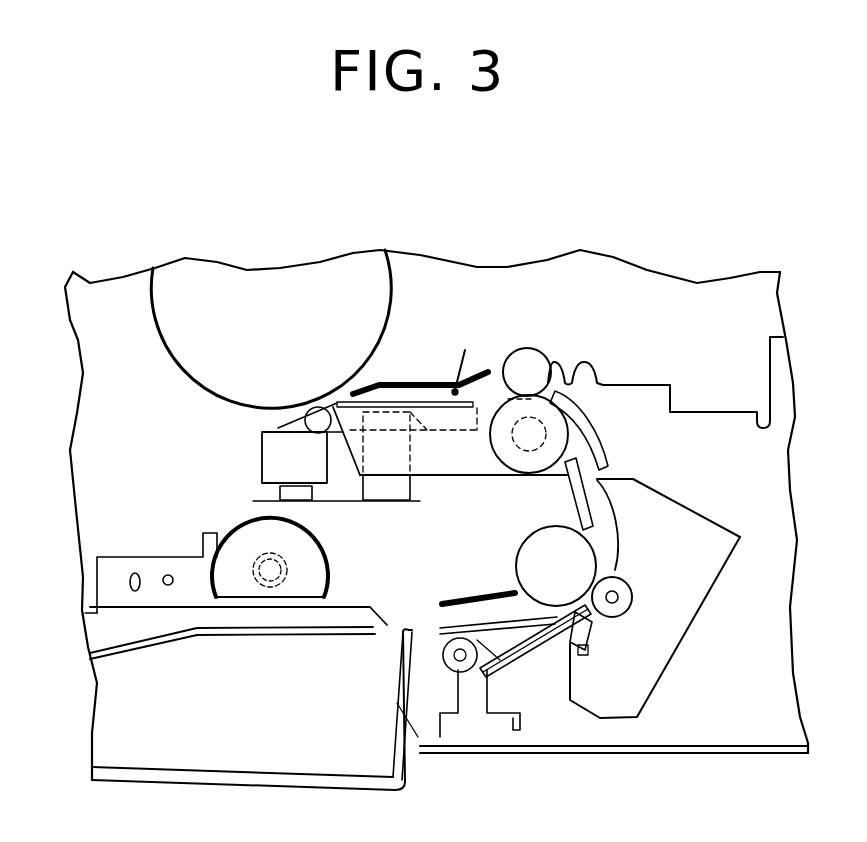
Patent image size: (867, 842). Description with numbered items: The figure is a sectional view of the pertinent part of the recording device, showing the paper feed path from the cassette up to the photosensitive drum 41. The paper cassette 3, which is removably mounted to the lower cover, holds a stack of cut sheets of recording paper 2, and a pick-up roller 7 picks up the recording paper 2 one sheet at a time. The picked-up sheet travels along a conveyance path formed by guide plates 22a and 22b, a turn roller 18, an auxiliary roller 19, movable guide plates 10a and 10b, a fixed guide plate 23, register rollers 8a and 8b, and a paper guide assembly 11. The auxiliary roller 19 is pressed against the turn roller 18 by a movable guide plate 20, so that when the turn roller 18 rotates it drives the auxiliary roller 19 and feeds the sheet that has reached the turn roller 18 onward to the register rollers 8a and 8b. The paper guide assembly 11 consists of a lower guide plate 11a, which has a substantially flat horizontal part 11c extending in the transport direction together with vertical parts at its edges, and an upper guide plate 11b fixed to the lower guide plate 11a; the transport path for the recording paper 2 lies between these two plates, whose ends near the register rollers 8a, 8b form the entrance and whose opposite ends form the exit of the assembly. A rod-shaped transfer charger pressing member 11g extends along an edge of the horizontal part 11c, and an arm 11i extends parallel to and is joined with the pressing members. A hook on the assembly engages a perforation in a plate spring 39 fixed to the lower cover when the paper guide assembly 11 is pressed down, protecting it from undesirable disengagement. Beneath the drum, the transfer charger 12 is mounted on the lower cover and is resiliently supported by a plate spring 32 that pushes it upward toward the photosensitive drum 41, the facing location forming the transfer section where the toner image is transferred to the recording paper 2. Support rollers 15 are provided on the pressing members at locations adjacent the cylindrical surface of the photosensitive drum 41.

The paper guide assembly 11 is at (477, 296).
The photosensitive drum 41 is at (390, 296).
The register roller 8a is at (539, 405).
The register roller 8b is at (527, 352).
The movable guide plate 10a is at (645, 490).
The movable guide plate 10b is at (583, 419).
The lower guide plate 11a is at (479, 356).
The upper guide plate 11b is at (433, 382).
The horizontal part 11c is at (408, 400).
The transfer charger pressing member 11g is at (282, 427).
The arm 11i is at (473, 463).
The support roller 15 is at (307, 410).
The plate spring 39 is at (427, 432).
The transfer charger 12 is at (262, 470).
The plate spring 32 is at (278, 495).
The fixed guide plate 23 is at (572, 498).
The pick-up roller 7 is at (203, 540).
The turn roller 18 is at (587, 553).
The auxiliary roller 19 is at (632, 597).
The guide plate 22a is at (462, 597).
The guide plate 22b is at (527, 645).
The movable guide plate 20 is at (663, 670).
The recording paper 2 is at (88, 645).
The paper cassette 3 is at (418, 781).